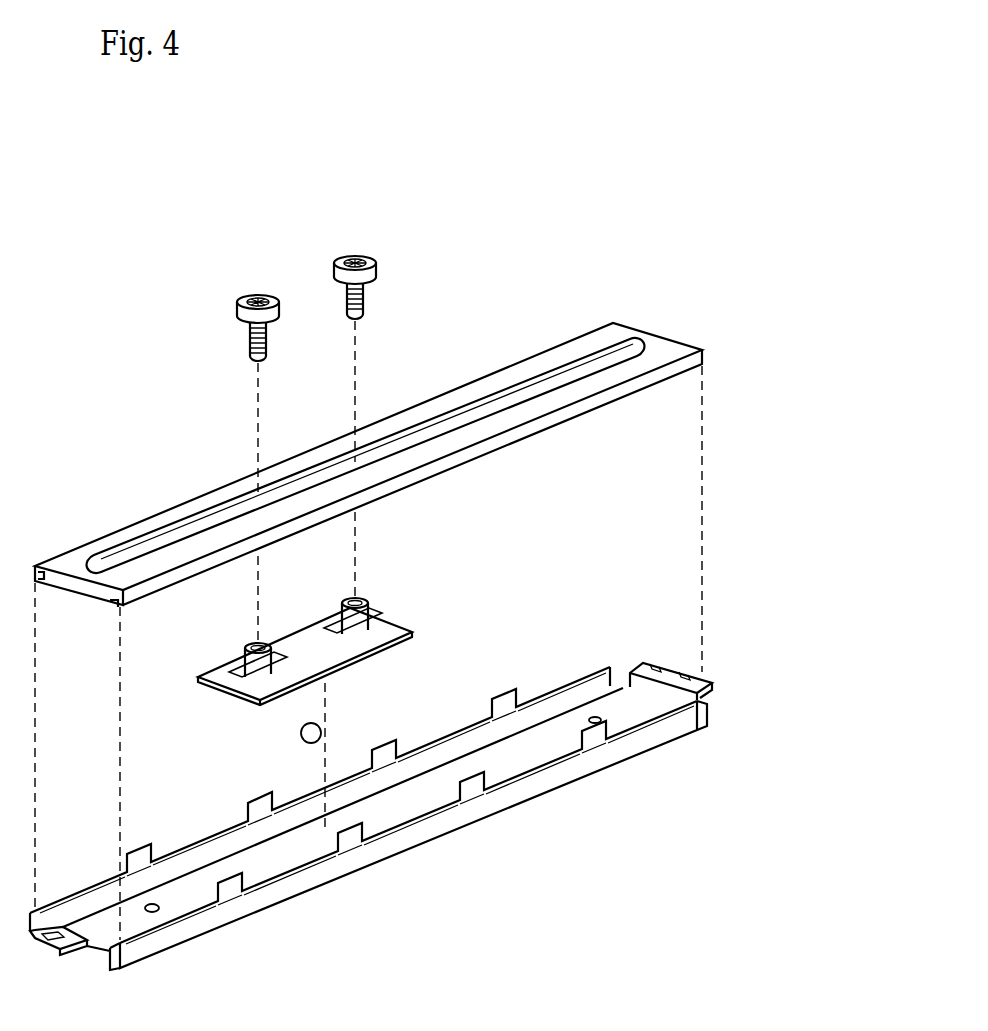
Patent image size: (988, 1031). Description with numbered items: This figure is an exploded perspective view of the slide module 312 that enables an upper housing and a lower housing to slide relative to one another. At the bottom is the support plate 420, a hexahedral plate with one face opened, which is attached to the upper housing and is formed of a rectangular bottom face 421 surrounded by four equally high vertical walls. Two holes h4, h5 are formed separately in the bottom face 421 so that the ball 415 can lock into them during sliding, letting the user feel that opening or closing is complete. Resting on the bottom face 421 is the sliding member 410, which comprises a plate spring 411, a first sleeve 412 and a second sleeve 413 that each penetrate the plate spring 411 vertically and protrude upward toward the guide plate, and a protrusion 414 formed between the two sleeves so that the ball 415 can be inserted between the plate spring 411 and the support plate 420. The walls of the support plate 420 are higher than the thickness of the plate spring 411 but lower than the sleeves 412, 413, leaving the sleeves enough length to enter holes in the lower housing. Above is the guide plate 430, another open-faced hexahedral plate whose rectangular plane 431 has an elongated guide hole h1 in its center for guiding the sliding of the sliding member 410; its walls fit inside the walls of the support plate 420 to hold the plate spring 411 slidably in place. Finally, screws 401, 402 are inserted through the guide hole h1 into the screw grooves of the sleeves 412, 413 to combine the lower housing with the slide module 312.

The slide module 312 is at (399, 533).
The screw 401 is at (253, 288).
The screw 402 is at (352, 245).
The guide plate 430 is at (415, 444).
The rectangular plane 431 is at (336, 420).
The guide hole h1 is at (366, 455).
The sliding member 410 is at (326, 650).
The plate spring 411 is at (305, 662).
The first sleeve 412 is at (356, 643).
The second sleeve 413 is at (215, 645).
The protrusion 414 is at (326, 607).
The ball 415 is at (262, 743).
The support plate 420 is at (435, 824).
The rectangular bottom face 421 is at (345, 807).
The hole h4 is at (167, 958).
The hole h5 is at (644, 743).